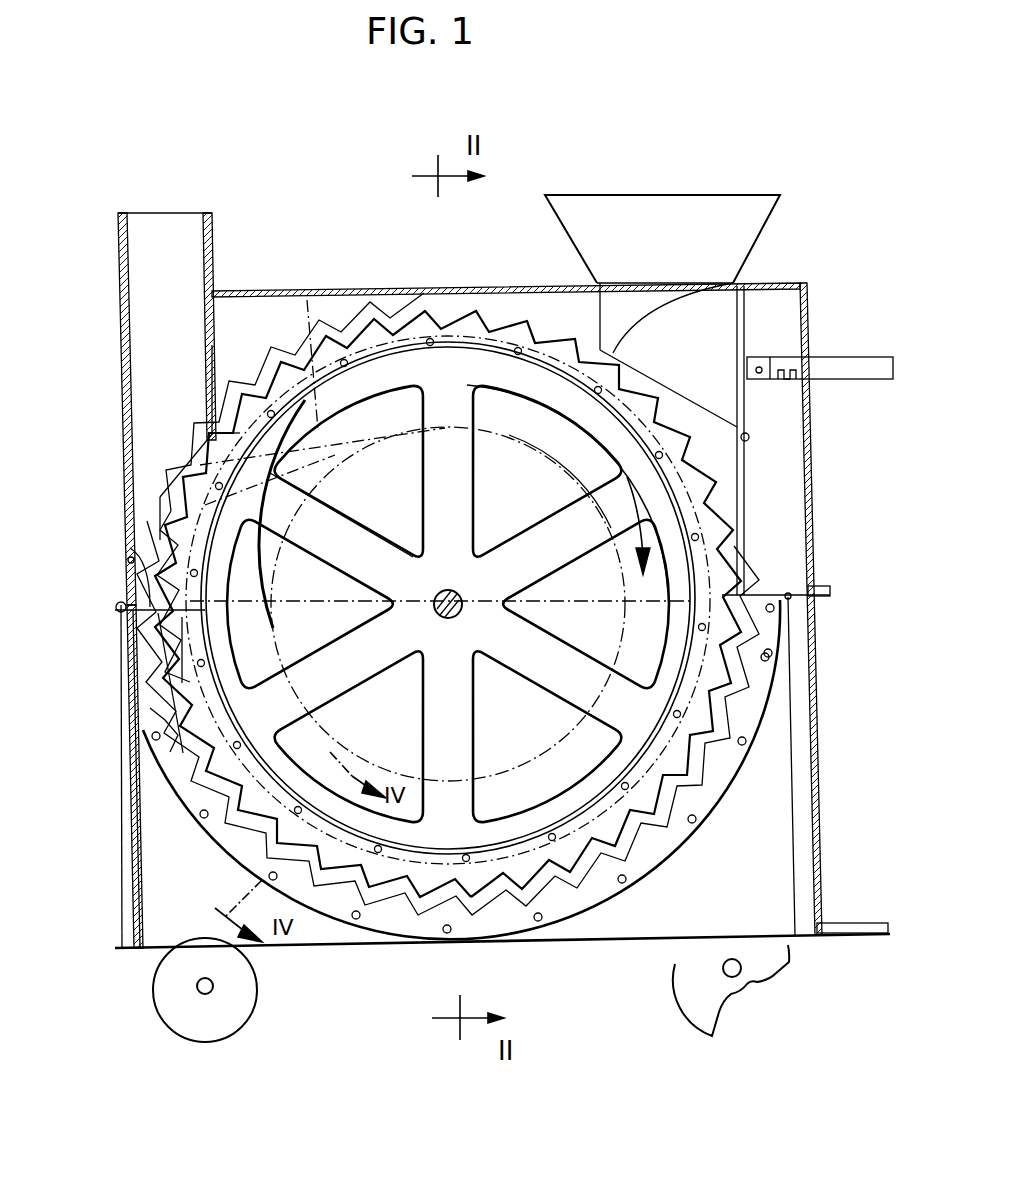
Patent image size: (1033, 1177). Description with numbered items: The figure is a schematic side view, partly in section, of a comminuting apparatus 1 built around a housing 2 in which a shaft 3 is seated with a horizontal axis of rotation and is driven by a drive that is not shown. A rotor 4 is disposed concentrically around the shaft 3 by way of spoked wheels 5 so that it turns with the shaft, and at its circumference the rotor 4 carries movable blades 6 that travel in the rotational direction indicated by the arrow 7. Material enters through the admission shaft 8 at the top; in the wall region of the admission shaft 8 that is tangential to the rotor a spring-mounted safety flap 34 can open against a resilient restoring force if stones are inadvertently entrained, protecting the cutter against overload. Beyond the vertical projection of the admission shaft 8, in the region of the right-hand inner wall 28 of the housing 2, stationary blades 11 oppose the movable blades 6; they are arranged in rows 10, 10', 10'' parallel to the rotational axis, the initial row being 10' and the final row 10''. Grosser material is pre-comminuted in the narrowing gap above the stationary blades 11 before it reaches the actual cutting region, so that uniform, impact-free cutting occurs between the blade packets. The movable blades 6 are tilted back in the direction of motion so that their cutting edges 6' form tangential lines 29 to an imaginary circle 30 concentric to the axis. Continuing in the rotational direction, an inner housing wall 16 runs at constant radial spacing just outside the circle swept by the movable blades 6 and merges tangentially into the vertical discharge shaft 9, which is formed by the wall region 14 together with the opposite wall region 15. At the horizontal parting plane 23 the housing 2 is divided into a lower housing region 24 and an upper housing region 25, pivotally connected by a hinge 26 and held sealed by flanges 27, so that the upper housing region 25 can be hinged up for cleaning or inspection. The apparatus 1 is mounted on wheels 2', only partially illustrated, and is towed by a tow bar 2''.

The apparatus 1 is at (790, 178).
The housing 2 is at (148, 776).
The wheels 2' is at (444, 990).
The tow bar 2'' is at (852, 909).
The shaft 3 is at (460, 600).
The rotor 4 is at (448, 604).
The spoked wheels 5 is at (448, 604).
The movable blades 6 is at (244, 577).
The cutting edges 6' is at (249, 402).
The arrow 7 is at (548, 424).
The admission shaft 8 is at (655, 212).
The discharge shaft 9 is at (158, 240).
The rows of stationary blades 10 is at (448, 758).
The initial row 10' is at (819, 766).
The final row 10'' is at (126, 730).
The stationary blades 11 is at (490, 914).
The wall region 14 is at (120, 328).
The opposite wall region 15 is at (213, 345).
The inner housing wall 16 is at (172, 660).
The horizontal parting plane 23 is at (128, 558).
The lower housing region 24 is at (306, 936).
The upper housing region 25 is at (506, 272).
The hinge 26 is at (117, 604).
The flanges 27 is at (830, 590).
The right-hand inner wall 28 is at (748, 408).
The tangential lines 29 is at (288, 388).
The imaginary circle 30 is at (540, 458).
The safety flap 34 is at (745, 548).